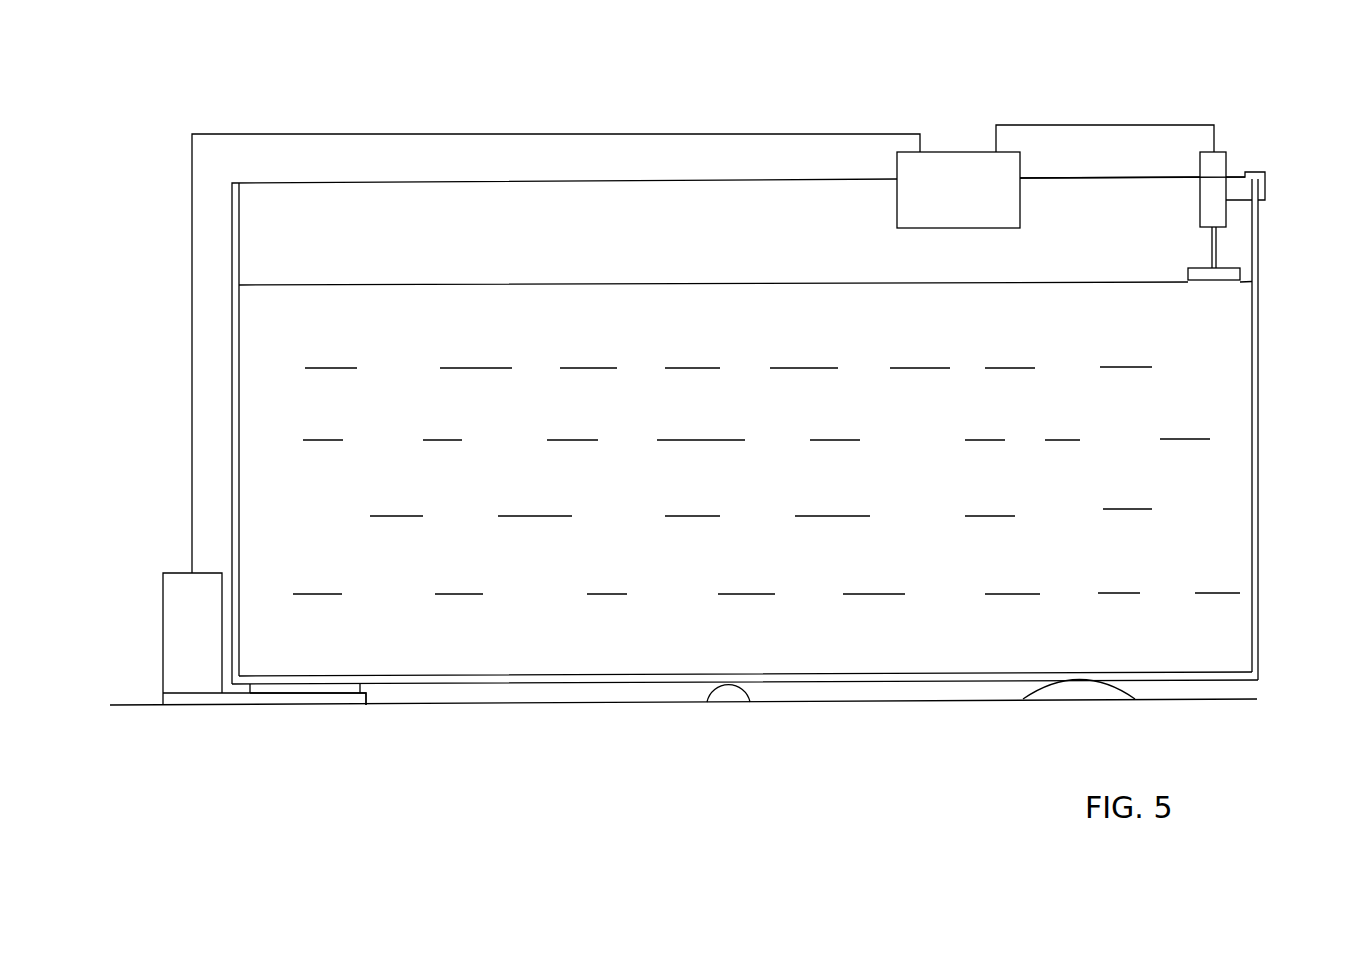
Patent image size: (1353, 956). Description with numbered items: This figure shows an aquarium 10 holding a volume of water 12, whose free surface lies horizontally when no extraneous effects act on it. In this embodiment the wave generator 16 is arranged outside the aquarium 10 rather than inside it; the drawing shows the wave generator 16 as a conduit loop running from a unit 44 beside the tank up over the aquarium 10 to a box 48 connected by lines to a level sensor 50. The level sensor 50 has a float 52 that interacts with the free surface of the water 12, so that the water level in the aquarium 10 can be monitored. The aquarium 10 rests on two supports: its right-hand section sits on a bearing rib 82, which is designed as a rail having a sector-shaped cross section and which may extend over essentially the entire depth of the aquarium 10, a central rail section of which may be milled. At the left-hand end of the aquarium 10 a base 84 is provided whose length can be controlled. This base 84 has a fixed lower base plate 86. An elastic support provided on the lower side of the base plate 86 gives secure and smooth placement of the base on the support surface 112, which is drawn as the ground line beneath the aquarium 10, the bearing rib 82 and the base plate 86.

The aquarium 10 is at (1265, 413).
The volume of water 12 is at (1145, 496).
The wave generator 16 is at (175, 512).
The pump 44 is at (181, 636).
The controller 48 is at (980, 217).
The level sensor 50 is at (1218, 172).
The float 52 is at (1205, 274).
The bearing rib 82 is at (1093, 692).
The base 84 is at (322, 676).
The lower base plate 86 is at (267, 697).
The support surface 112 is at (748, 704).